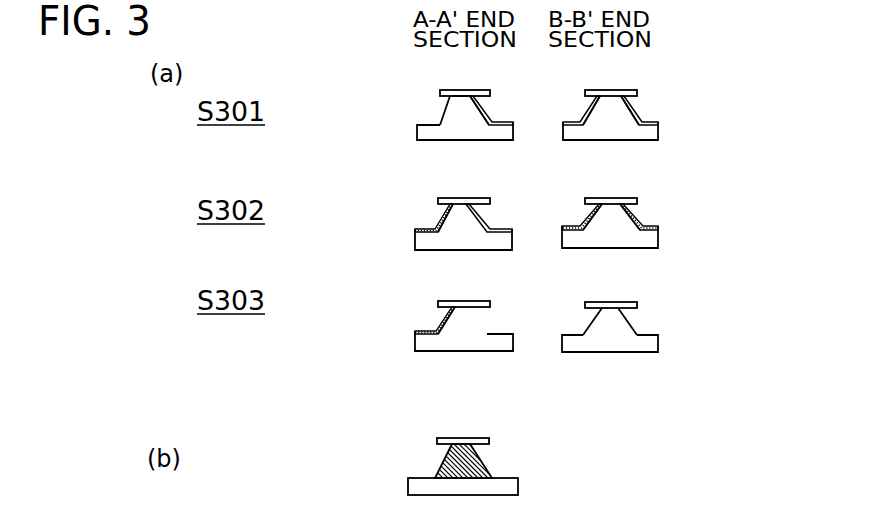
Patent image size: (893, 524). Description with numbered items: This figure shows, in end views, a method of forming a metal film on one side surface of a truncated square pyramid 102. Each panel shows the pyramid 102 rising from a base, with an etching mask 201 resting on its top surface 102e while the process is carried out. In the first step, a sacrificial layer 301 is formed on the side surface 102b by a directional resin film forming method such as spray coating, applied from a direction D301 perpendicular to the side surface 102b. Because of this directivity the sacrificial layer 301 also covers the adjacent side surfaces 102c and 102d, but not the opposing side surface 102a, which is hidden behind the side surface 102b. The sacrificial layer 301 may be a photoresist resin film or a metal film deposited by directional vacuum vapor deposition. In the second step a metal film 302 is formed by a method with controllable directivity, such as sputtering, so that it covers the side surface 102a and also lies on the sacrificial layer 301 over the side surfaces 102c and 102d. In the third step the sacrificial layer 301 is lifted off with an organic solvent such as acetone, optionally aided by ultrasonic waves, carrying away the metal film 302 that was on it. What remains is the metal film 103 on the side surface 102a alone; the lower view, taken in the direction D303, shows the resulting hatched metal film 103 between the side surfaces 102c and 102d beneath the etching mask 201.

The etching mask 201 is at (451, 91).
The truncated square pyramid 102 is at (463, 117).
The top surface 102e is at (448, 101).
The side surface 102a is at (443, 117).
The side surface 102b is at (479, 117).
The side surface 102c is at (600, 115).
The side surface 102d is at (628, 115).
The sacrificial layer 301 is at (487, 113).
The metal film 302 is at (449, 211).
The metal film 103 is at (437, 332).
The direction D301 is at (494, 104).
The direction D303 is at (428, 315).